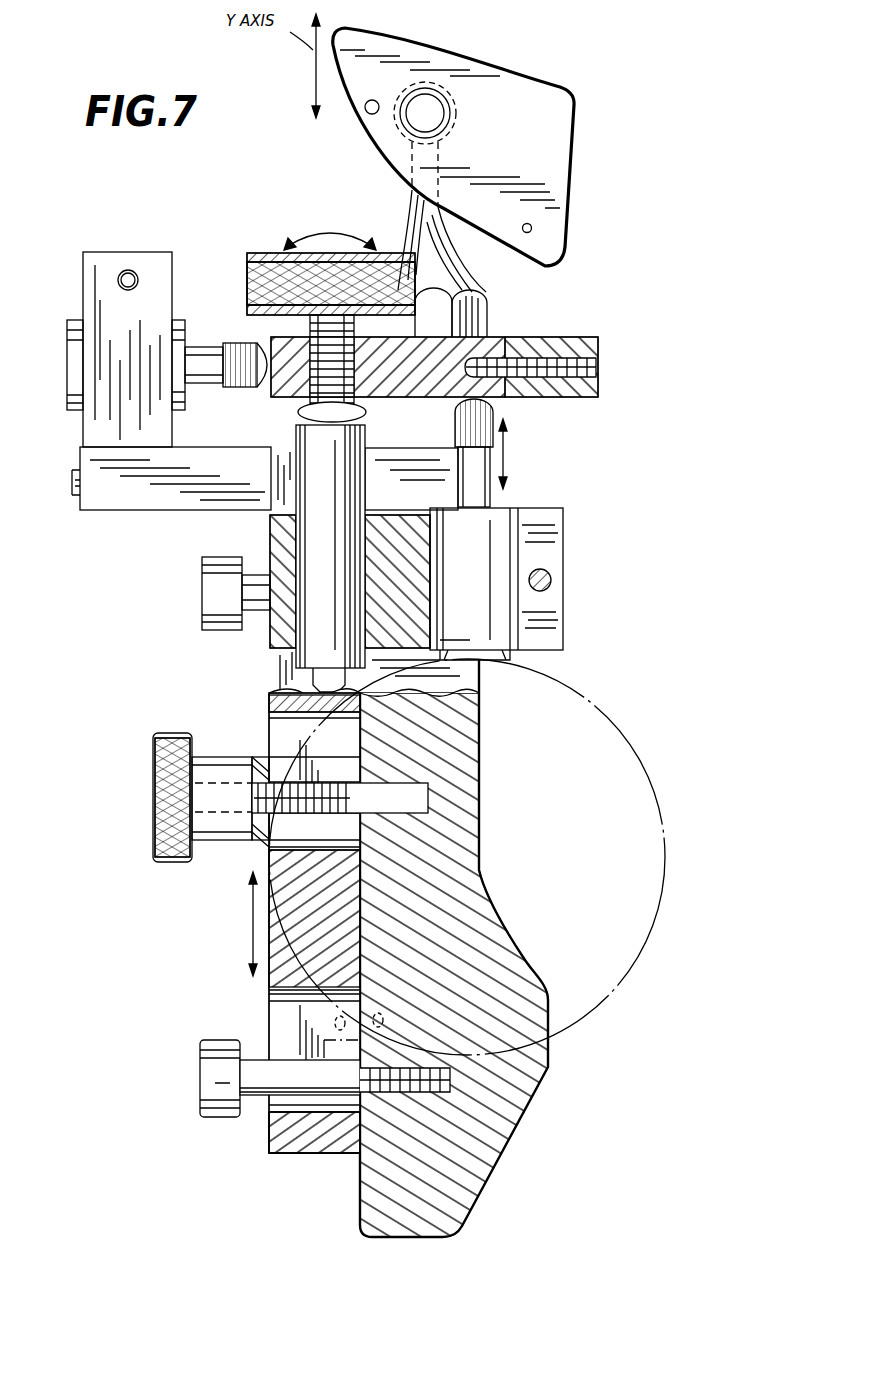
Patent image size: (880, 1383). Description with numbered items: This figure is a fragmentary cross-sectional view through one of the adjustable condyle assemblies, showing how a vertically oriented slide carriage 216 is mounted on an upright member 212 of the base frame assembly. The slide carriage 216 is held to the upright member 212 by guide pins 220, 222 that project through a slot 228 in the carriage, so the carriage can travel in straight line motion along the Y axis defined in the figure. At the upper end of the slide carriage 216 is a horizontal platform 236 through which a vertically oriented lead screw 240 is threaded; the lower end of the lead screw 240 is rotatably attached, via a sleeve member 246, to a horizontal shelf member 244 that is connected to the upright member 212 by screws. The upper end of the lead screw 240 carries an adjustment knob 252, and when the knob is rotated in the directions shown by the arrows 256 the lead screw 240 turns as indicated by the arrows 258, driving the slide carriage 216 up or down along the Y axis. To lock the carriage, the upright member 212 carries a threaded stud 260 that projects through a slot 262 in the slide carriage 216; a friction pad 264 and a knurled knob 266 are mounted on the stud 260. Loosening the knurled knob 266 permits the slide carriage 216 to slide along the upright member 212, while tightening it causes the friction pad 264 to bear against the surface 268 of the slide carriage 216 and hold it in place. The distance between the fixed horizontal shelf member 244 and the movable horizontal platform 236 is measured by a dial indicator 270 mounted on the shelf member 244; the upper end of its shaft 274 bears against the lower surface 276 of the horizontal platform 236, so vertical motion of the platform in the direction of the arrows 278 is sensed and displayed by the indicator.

The upright member 212 is at (368, 1187).
The slide carriage 216 is at (281, 916).
The guide pin 220 is at (200, 1078).
The guide pin 222 is at (202, 600).
The slot 228 is at (270, 1110).
The horizontal platform 236 is at (459, 373).
The lead screw 240 is at (290, 380).
The horizontal shelf member 244 is at (563, 527).
The sleeve member 246 is at (312, 480).
The adjustment knob 252 is at (270, 276).
The arrows 256 is at (321, 236).
The arrows 258 is at (366, 412).
The threaded stud 260 is at (300, 790).
The slot 262 is at (274, 716).
The friction pad 264 is at (266, 842).
The knurled knob 266 is at (176, 864).
The surface 268 is at (264, 870).
The dial indicator 270 is at (568, 678).
The shaft 274 is at (491, 498).
The lower surface 276 is at (596, 398).
The plunger travel arrow 278 is at (508, 458).